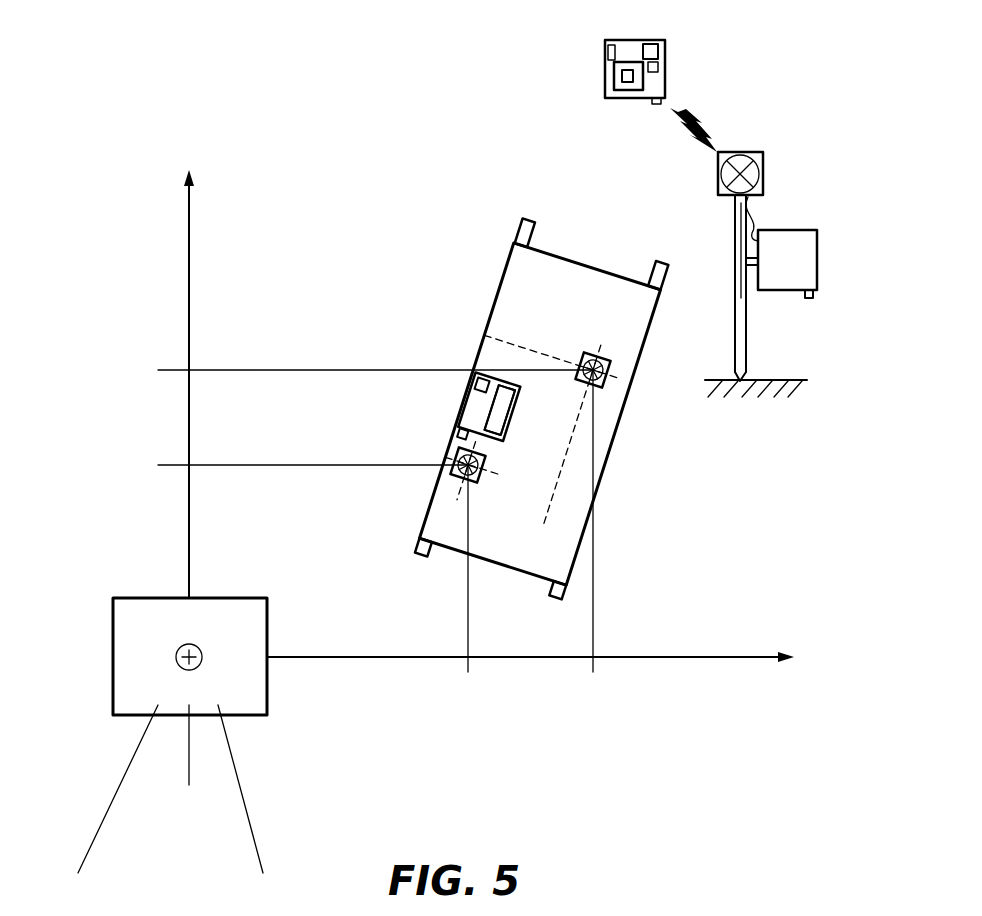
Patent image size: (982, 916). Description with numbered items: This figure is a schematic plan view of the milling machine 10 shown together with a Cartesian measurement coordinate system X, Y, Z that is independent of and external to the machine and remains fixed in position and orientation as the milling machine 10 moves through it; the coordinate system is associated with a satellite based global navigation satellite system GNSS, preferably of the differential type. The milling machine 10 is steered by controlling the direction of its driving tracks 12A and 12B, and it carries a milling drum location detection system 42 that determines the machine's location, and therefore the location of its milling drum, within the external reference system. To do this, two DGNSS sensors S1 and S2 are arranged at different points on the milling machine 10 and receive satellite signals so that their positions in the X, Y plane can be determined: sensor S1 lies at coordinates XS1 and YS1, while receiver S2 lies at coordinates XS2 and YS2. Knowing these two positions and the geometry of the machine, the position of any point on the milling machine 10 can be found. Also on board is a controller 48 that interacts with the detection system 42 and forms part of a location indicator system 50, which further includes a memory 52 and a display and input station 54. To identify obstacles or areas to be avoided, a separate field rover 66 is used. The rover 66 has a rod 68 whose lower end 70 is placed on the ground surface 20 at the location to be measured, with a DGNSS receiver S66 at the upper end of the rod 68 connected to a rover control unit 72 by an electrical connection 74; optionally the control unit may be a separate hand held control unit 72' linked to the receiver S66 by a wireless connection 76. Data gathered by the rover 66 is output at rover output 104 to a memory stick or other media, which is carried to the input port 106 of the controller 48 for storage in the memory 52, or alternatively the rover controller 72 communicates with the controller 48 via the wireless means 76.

The milling machine 10 is at (496, 302).
The driving track 12A is at (524, 232).
The driving track 12B is at (412, 540).
The ground surface 20 is at (767, 392).
The milling drum location detection system 42 is at (521, 409).
The controller 48 is at (412, 406).
The location indicator system 50 is at (412, 406).
The memory 52 is at (412, 406).
The display and input station 54 is at (503, 406).
The field rover 66 is at (778, 242).
The rod 68 is at (735, 308).
The lower end of the rod 70 is at (741, 386).
The rover control unit 72 is at (813, 271).
The hand held control unit 72' is at (656, 53).
The electrical connection 74 is at (752, 200).
The wireless connection 76 is at (673, 110).
The rover output 104 is at (809, 300).
The input port 106 is at (459, 440).
The DGNSS sensor S1 is at (485, 466).
The DGNSS sensor S2 is at (582, 357).
The DGNSS receiver S66 is at (748, 152).
The X coordinate of sensor S1 XS1 is at (291, 465).
The X coordinate of receiver S2 XS2 is at (354, 370).
The Y coordinate of sensor S1 YS1 is at (470, 584).
The Y coordinate of receiver S2 YS2 is at (597, 536).
The global navigation satellite system GNSS is at (113, 613).
The X axis of the measurement coordinate system X is at (177, 381).
The Y axis of the measurement coordinate system Y is at (530, 673).
The Z axis of the measurement coordinate system Z is at (199, 652).